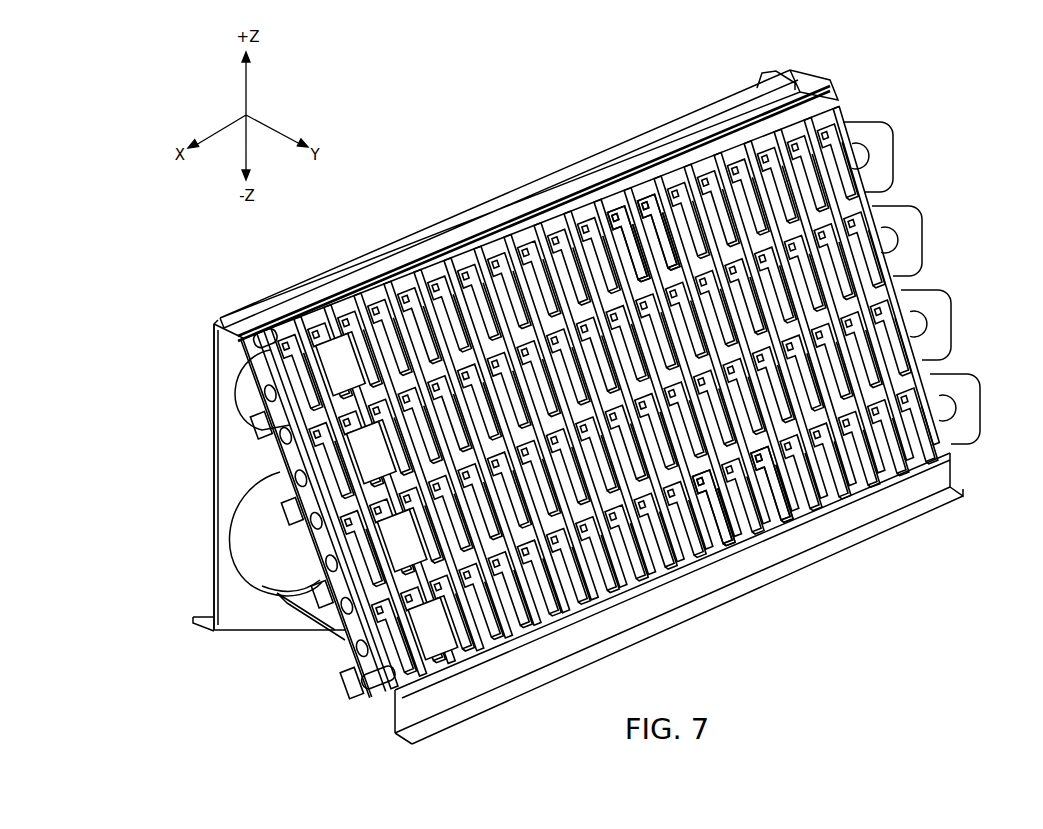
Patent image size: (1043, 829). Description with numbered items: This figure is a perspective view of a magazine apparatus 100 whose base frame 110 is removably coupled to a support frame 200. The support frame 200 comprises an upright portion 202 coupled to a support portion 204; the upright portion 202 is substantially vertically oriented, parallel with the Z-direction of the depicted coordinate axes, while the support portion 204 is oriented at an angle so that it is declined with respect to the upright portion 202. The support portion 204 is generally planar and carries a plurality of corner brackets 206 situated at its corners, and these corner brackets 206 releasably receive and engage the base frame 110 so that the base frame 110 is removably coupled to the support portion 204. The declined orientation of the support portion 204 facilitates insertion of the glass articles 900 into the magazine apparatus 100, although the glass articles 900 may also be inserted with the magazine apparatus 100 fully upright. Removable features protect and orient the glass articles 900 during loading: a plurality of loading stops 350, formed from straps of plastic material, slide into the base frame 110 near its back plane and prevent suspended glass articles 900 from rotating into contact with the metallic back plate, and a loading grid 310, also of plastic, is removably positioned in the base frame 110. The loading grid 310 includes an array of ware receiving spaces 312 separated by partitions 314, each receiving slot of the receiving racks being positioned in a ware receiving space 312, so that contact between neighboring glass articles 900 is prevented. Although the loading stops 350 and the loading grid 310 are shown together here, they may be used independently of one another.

The magazine apparatus 100 is at (430, 148).
The base frame 110 is at (767, 108).
The support frame 200 is at (212, 505).
The upright portion 202 is at (212, 387).
The support portion 204 is at (330, 622).
The corner brackets 206 is at (262, 342).
The loading grid 310 is at (803, 148).
The ware receiving spaces 312 is at (616, 209).
The partitions 314 is at (712, 491).
The loading stops 350 is at (893, 157).
The glass articles 900 is at (338, 362).